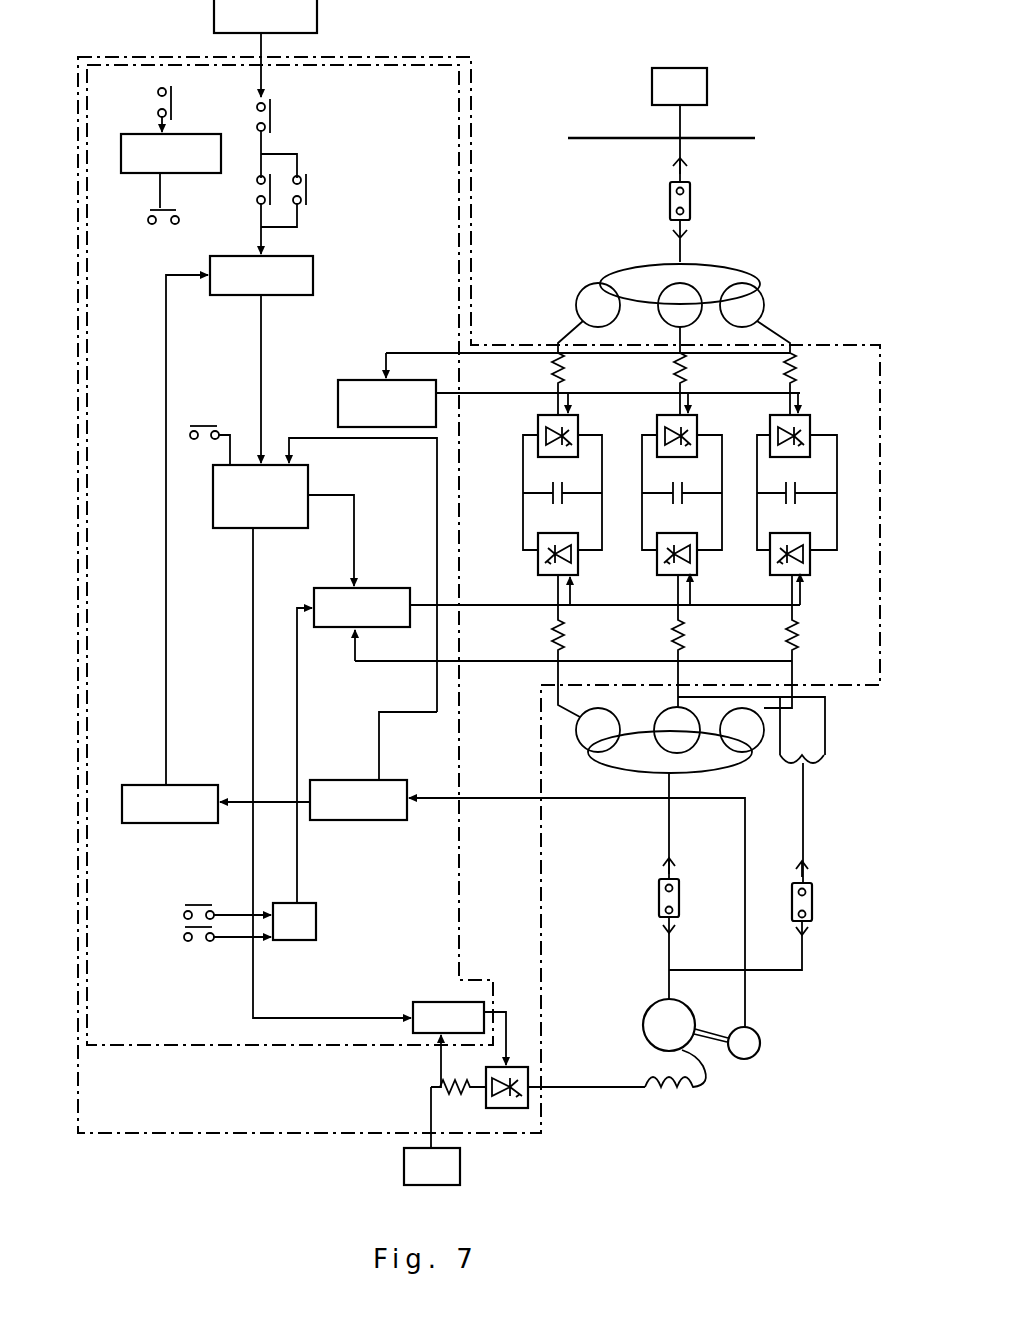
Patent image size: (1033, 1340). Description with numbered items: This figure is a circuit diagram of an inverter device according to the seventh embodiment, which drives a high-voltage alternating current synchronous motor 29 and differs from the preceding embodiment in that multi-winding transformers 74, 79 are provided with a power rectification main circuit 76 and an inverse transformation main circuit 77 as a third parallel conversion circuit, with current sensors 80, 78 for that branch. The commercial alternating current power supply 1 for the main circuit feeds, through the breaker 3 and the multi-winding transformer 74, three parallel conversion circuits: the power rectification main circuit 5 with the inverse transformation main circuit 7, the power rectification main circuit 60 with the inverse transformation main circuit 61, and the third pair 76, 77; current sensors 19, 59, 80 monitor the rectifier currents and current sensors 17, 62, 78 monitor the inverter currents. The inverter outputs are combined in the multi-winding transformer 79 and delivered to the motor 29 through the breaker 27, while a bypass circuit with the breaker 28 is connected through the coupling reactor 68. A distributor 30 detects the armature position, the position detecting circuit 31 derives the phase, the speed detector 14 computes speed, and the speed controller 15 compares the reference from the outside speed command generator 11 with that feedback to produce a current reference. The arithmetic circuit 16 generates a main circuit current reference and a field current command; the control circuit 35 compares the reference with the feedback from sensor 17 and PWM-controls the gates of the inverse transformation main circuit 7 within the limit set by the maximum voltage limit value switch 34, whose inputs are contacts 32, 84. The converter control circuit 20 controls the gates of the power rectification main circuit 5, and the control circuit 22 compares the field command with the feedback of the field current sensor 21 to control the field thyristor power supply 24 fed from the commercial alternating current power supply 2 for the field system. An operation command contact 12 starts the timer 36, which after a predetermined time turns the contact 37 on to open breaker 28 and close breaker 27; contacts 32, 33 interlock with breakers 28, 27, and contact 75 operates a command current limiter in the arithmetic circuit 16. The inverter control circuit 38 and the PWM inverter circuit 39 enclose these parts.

The commercial alternating current power supply for main circuit 1 is at (679, 86).
The commercial alternating current power supply for field system 2 is at (432, 1166).
The breaker 3 is at (690, 205).
The power rectification main circuit 5 is at (578, 428).
The inverse transformation main circuit 7 is at (578, 567).
The outside speed command generator 11 is at (265, 16).
The contact 12 is at (277, 124).
The speed detector 14 is at (170, 804).
The speed controller 15 is at (261, 275).
The arithmetic circuit 16 is at (260, 496).
The main circuit current sensor 17 is at (566, 638).
The current sensor 19 is at (566, 374).
The converter control circuit 20 is at (387, 403).
The field current sensor 21 is at (437, 1085).
The control circuit 22 is at (448, 1017).
The field thyristor power supply 24 is at (510, 1108).
The breaker 27 is at (658, 900).
The breaker 28 is at (812, 905).
The alternating current synchronous motor 29 is at (683, 1083).
The distributor 30 is at (752, 1057).
The position detecting circuit 31 is at (358, 800).
The contact 32 is at (251, 183).
The contact 33 is at (311, 192).
The maximum voltage limit value switch 34 is at (294, 921).
The control circuit 35 is at (362, 607).
The timer 36 is at (171, 153).
The contact 37 is at (146, 226).
The inverter control circuit 38 is at (457, 906).
The inverter circuit for PWM control 39 is at (477, 102).
The current sensor 59 is at (688, 374).
The power rectification main circuit 60 is at (697, 428).
The inverse transformation main circuit 61 is at (697, 567).
The current sensor 62 is at (686, 638).
The coupling reactor 68 is at (818, 765).
The multi-winding transformer 74 is at (753, 283).
The contact 75 is at (215, 420).
The power rectification main circuit 76 is at (810, 428).
The inverse transformation main circuit 77 is at (810, 567).
The current sensor 78 is at (800, 638).
The multi-winding transformer 79 is at (722, 768).
The current sensor 80 is at (798, 374).
The switch 84 is at (183, 952).